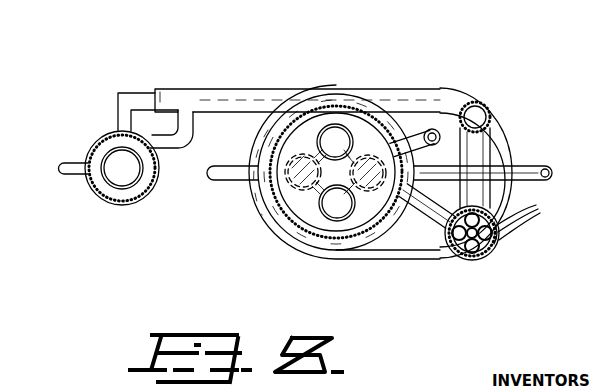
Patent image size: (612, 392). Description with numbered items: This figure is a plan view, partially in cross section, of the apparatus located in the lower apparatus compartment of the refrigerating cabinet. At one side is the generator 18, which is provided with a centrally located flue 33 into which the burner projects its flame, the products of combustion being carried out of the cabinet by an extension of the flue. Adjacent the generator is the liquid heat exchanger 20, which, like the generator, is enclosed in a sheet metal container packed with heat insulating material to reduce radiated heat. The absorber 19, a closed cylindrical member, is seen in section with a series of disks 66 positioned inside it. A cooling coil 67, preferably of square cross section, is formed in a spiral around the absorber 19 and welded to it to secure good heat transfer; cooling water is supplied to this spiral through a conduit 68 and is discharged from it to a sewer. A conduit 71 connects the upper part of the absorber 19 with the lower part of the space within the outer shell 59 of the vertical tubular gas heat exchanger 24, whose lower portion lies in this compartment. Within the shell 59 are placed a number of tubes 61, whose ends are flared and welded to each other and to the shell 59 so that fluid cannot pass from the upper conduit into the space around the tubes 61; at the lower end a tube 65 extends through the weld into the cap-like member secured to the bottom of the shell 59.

The generator 18 is at (119, 207).
The flue 33 is at (110, 155).
The liquid heat exchanger 20 is at (425, 104).
The cooling coil 67 is at (323, 262).
The absorber 19 is at (356, 247).
The disks 66 is at (293, 205).
The conduit 68 is at (216, 179).
The conduit 71 is at (480, 103).
The tube 65 is at (455, 260).
The outer shell 59 is at (483, 263).
The gas heat exchanger 24 is at (501, 242).
The tubes 61 is at (531, 216).